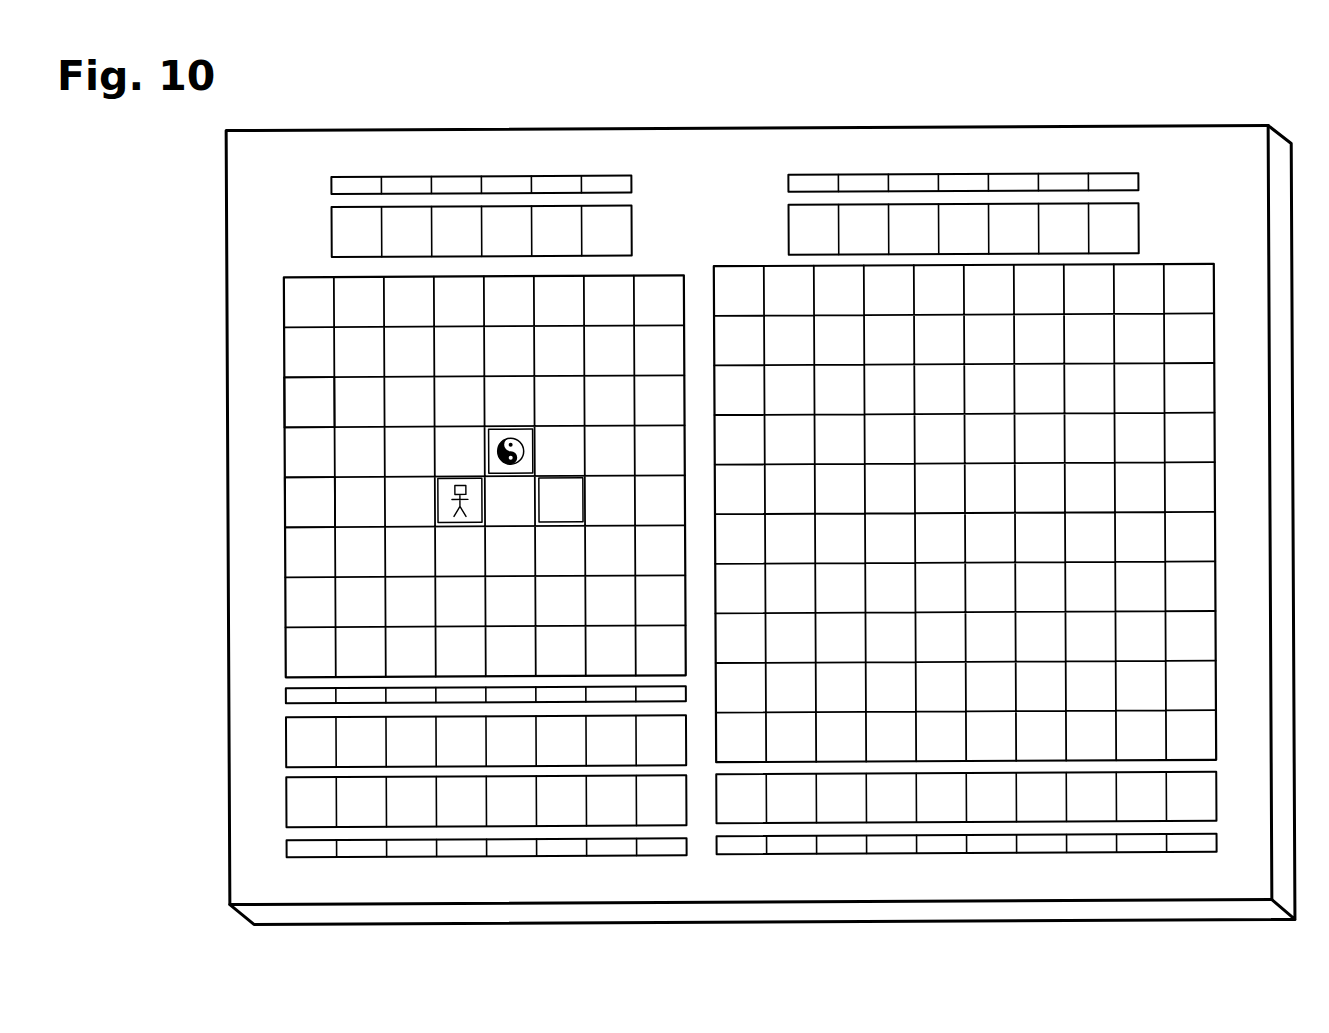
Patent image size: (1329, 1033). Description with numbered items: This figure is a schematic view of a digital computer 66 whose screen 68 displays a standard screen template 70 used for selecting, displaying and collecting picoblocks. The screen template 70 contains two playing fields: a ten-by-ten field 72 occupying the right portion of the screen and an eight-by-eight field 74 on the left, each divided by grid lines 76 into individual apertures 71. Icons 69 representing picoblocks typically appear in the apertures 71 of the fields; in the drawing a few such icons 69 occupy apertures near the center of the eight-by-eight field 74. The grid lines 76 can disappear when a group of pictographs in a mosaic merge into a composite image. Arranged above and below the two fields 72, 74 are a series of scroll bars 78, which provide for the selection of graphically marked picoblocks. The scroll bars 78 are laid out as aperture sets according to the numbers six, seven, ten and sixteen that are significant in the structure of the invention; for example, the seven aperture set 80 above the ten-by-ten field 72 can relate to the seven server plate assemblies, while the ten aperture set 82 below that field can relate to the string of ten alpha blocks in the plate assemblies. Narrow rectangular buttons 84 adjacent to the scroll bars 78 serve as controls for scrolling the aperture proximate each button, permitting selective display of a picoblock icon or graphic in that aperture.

The digital computer 66 is at (1280, 153).
The screen 68 is at (1185, 147).
The icons 69 is at (535, 448).
The screen template 70 is at (410, 449).
The apertures 71 is at (305, 505).
The 10×10 field 72 is at (1195, 264).
The 8×8 field 74 is at (285, 303).
The grid lines 76 is at (312, 377).
The scroll bars 78 is at (290, 730).
The seven aperture set 80 is at (1140, 220).
The 10 aperture set 82 is at (1217, 793).
The rectangular buttons 84 is at (1217, 838).